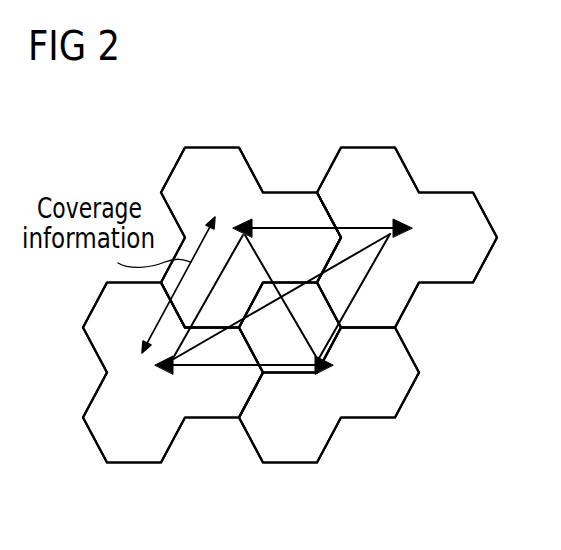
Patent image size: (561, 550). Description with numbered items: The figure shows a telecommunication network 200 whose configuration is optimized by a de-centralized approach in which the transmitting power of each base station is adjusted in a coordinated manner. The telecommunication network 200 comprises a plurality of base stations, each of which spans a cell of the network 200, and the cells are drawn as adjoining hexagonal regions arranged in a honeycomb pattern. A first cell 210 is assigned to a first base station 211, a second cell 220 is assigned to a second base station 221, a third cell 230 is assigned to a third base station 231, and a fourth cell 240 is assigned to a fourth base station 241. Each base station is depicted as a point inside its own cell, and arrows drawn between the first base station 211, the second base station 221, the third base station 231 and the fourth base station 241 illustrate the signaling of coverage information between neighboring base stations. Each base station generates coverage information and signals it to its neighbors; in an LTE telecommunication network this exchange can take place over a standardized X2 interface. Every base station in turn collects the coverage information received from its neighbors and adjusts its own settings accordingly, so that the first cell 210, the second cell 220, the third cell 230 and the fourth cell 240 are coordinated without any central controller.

The telecommunication network 200 is at (427, 110).
The first cell 210 is at (212, 148).
The second cell 220 is at (447, 197).
The third cell 230 is at (395, 387).
The fourth cell 240 is at (133, 463).
The first base station 211 is at (235, 218).
The second base station 221 is at (402, 233).
The third base station 231 is at (318, 377).
The fourth base station 241 is at (160, 377).